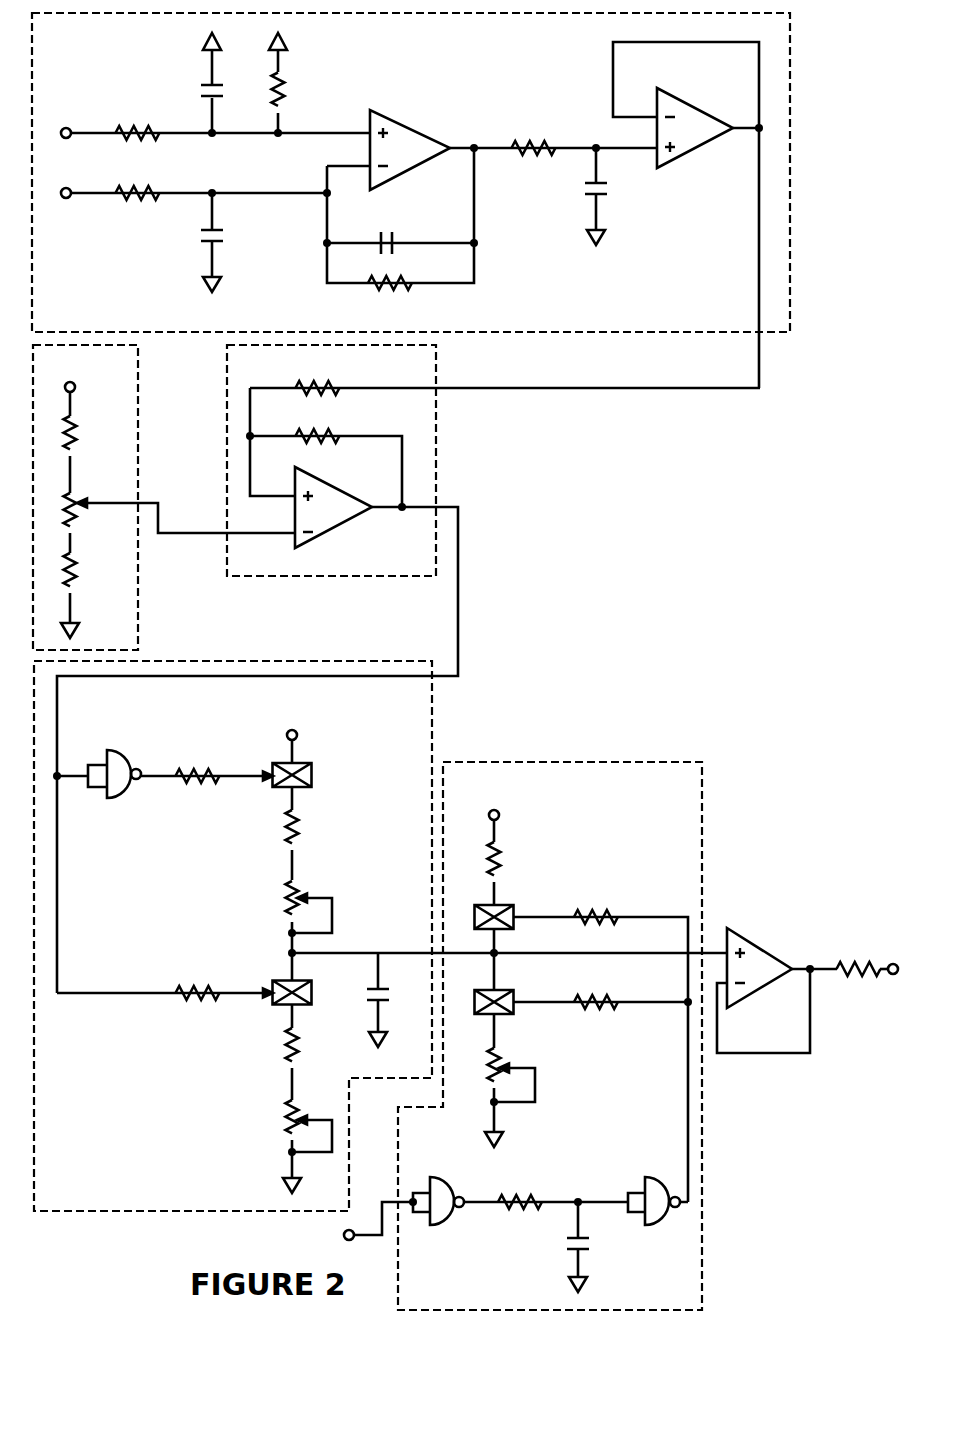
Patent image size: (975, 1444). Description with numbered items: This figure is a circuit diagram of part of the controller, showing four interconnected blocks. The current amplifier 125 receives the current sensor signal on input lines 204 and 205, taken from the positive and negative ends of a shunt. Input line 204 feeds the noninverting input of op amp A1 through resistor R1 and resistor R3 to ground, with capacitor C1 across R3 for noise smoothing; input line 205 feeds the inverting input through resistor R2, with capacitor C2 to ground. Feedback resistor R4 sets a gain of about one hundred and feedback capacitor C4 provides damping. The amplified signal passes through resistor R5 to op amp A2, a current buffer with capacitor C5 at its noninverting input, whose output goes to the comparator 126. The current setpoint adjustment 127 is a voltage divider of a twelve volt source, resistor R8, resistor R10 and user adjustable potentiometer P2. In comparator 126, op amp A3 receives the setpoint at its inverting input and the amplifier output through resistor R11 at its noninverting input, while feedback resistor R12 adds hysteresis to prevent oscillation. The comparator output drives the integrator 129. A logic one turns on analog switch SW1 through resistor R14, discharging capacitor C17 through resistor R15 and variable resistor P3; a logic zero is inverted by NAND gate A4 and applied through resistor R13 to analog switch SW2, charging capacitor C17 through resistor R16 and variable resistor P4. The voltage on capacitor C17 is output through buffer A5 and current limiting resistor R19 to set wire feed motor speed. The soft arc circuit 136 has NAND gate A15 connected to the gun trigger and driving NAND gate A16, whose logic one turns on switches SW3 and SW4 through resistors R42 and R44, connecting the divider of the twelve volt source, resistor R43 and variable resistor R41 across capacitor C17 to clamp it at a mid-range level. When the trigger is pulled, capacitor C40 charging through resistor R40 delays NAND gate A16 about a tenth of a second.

The input line 204 is at (70, 127).
The input line 205 is at (70, 200).
The resistor R1 is at (150, 127).
The resistor R2 is at (148, 200).
The resistor R3 is at (285, 86).
The feedback resistor R4 is at (403, 290).
The resistor R5 is at (540, 140).
The capacitor C1 is at (222, 92).
The capacitor C2 is at (222, 244).
The feedback capacitor C4 is at (390, 234).
The capacitor C5 is at (606, 196).
The op amp A1 is at (392, 118).
The op amp A2 is at (692, 104).
The current amplifier 125 is at (791, 228).
The current setpoint adjustment 127 is at (139, 418).
The resistor R8 is at (76, 428).
The potentiometer P2 is at (77, 498).
The resistor R10 is at (76, 566).
The comparator 126 is at (437, 440).
The resistor R11 is at (306, 386).
The feedback resistor R12 is at (306, 434).
The op amp A3 is at (326, 485).
The integrator 129 is at (130, 1212).
The inverting NAND gate A4 is at (129, 771).
The resistor R13 is at (192, 773).
The analog switch SW2 is at (313, 774).
The resistor R16 is at (298, 822).
The variable resistor P4 is at (286, 895).
The resistor R14 is at (192, 992).
The analog switch SW1 is at (313, 993).
The resistor R15 is at (298, 1042).
The variable resistor P3 is at (286, 1114).
The capacitor C17 is at (390, 1000).
The soft arc circuit 136 is at (703, 1162).
The resistor R43 is at (498, 870).
The switch SW4 is at (514, 910).
The resistor R44 is at (600, 912).
The switch SW3 is at (514, 995).
The resistor R42 is at (600, 997).
The variable resistor R41 is at (488, 1058).
The NAND gate A15 is at (441, 1178).
The resistor R40 is at (526, 1195).
The NAND gate A16 is at (653, 1178).
The capacitor C40 is at (590, 1248).
The buffer A5 is at (755, 1000).
The current limiting resistor R19 is at (862, 962).